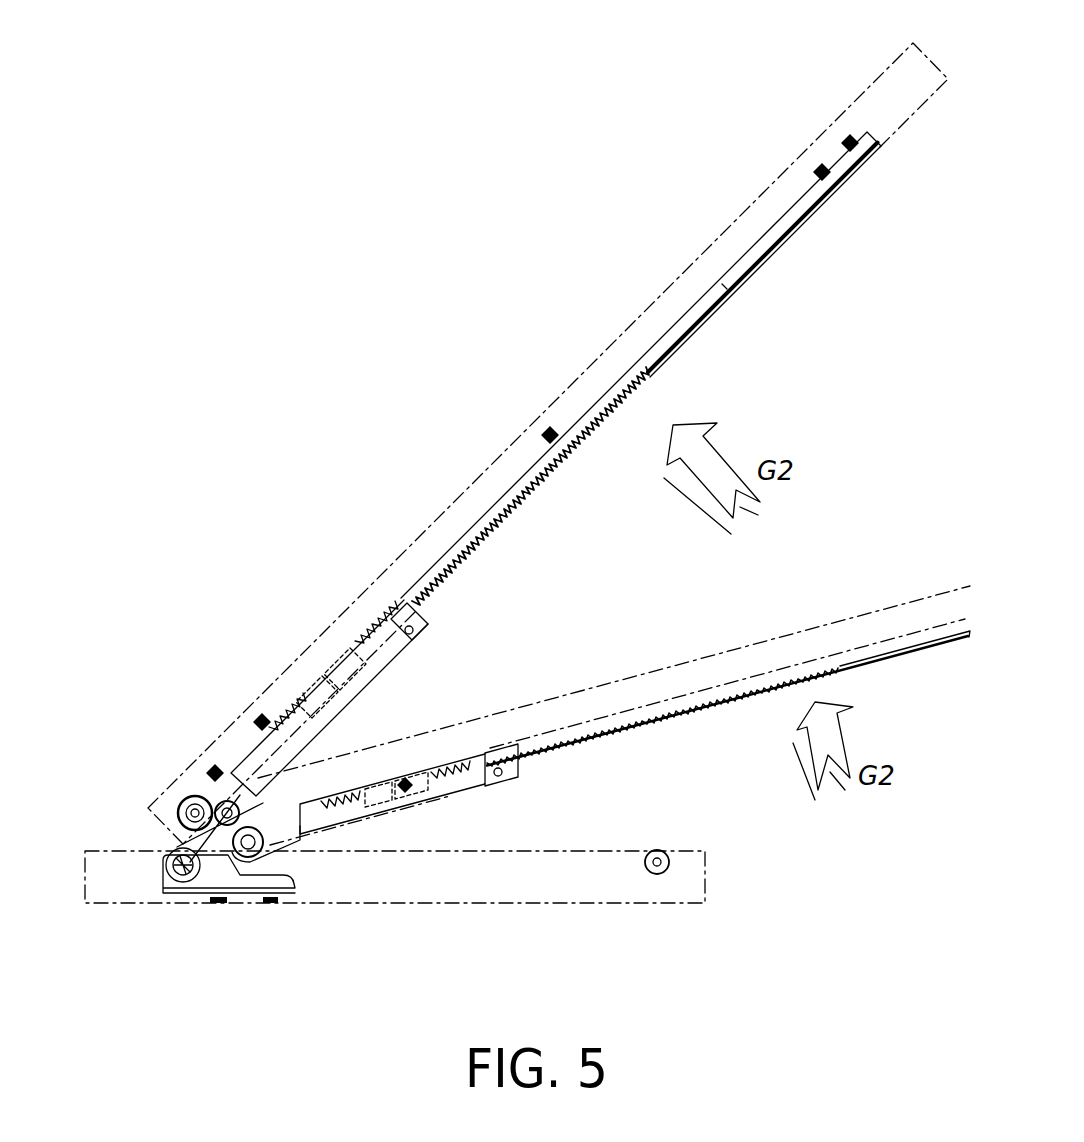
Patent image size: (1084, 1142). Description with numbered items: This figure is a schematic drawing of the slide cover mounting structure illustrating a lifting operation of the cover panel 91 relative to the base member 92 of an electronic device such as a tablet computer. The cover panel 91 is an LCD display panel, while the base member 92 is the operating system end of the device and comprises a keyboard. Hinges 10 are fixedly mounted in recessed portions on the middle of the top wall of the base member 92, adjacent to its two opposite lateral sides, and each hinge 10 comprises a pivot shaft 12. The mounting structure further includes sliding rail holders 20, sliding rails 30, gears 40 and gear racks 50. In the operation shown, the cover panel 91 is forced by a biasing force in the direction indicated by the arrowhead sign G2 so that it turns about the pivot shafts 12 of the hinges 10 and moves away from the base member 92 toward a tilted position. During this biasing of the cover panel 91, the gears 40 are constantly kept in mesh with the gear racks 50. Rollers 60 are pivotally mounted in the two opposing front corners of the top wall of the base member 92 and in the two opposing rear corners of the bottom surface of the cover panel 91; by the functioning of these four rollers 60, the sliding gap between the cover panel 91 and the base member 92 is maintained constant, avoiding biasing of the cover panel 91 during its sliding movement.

The hinge 10 is at (186, 872).
The pivot shaft 12 is at (203, 870).
The sliding rail holder 20 is at (312, 685).
The sliding rail 30 is at (655, 338).
The gear 40 is at (222, 800).
The gear rack 50 is at (447, 580).
The roller 60 is at (192, 798).
The cover panel 91 is at (895, 82).
The base member 92 is at (100, 848).